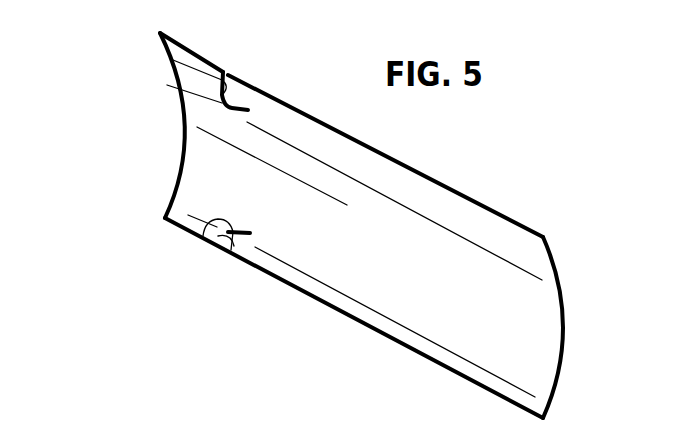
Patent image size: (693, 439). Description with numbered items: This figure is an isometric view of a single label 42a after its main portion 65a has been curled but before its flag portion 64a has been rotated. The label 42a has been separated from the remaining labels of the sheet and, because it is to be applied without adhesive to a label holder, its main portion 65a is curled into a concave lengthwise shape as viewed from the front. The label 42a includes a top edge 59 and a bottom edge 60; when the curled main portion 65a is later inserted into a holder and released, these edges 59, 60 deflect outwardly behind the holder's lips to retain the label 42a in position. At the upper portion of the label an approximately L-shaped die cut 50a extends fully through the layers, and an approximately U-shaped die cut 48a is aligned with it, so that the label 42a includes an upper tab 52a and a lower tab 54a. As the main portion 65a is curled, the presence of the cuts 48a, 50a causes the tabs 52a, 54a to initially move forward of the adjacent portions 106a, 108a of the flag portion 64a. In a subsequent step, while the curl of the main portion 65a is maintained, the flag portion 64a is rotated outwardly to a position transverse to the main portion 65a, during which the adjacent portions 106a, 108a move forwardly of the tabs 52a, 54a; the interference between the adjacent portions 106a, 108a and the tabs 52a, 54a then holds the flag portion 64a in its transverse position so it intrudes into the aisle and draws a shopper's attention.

The label 42a is at (547, 290).
The die cut 48a is at (232, 250).
The die cut 50a is at (178, 64).
The upper tab 52a is at (233, 70).
The lower tab 54a is at (238, 252).
The top edge 59 is at (418, 170).
The bottom edge 60 is at (330, 307).
The flag portion 64a is at (182, 165).
The main portion 65a is at (463, 373).
The adjacent portion 106a is at (218, 103).
The adjacent portion 108a is at (195, 235).